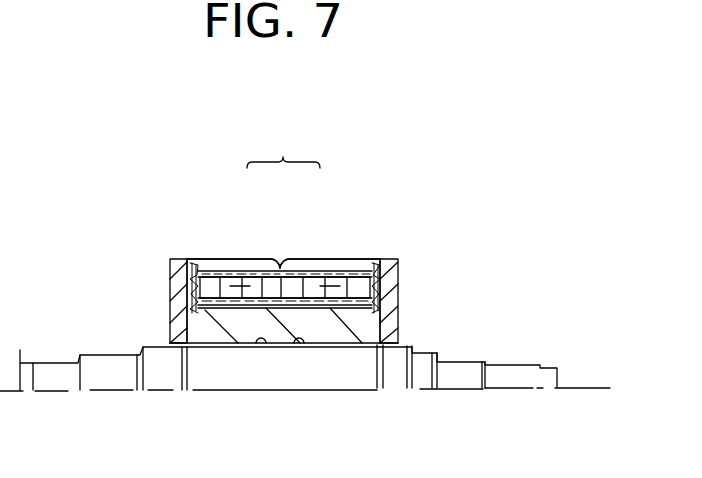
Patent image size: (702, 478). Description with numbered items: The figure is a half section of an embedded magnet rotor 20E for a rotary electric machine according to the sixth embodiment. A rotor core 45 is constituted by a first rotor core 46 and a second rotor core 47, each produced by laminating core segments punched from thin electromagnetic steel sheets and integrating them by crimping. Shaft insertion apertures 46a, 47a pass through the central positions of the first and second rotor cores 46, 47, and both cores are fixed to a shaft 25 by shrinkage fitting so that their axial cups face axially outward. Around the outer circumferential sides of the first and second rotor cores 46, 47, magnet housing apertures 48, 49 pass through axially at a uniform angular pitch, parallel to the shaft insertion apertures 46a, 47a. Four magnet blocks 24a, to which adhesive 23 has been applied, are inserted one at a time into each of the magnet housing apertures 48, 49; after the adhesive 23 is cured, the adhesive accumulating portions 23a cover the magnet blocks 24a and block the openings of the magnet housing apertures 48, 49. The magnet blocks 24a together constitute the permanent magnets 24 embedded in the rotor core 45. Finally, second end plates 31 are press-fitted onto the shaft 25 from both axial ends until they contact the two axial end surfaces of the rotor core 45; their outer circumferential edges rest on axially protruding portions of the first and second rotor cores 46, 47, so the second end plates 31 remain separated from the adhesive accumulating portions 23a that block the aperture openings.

The rotor 20E is at (85, 142).
The adhesive 23 is at (203, 259).
The adhesive accumulating portions 23a is at (192, 285).
The vibrating body 24 is at (362, 276).
The magnet blocks 24a is at (237, 288).
The shaft 25 is at (507, 372).
The second end plates 31 is at (178, 311).
The rotor core 45 is at (283, 149).
The first rotor core 46 is at (265, 257).
The second rotor core 47 is at (307, 257).
The shaft insertion aperture 46a is at (260, 345).
The shaft insertion aperture 47a is at (302, 345).
The magnet housing apertures 48 is at (233, 272).
The magnet housing apertures 49 is at (313, 280).